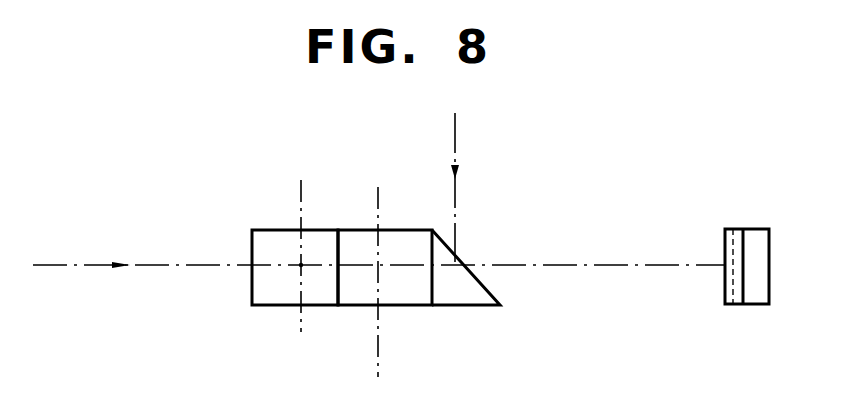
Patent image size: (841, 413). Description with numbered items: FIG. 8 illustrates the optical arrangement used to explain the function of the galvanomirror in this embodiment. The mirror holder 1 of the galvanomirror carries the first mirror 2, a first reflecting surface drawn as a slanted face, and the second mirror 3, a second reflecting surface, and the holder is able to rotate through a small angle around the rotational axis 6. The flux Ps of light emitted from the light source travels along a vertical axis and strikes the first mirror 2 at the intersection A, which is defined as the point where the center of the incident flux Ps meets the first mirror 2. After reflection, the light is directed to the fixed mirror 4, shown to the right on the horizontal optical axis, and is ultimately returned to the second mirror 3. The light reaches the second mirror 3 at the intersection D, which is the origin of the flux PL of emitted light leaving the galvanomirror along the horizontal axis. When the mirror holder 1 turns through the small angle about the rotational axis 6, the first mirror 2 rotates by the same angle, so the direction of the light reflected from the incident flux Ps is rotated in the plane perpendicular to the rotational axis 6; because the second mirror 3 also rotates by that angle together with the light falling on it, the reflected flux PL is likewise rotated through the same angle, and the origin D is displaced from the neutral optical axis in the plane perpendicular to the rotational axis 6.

The mirror holder 1 is at (410, 305).
The first mirror 2 is at (483, 283).
The second mirror 3 is at (273, 235).
The fixed mirror 4 is at (760, 236).
The rotational axis 6 is at (377, 363).
The intersection A is at (452, 263).
The intersection D is at (301, 265).
The flux of light reflected from the second mirror PL is at (147, 262).
The flux of incident light Ps is at (455, 125).